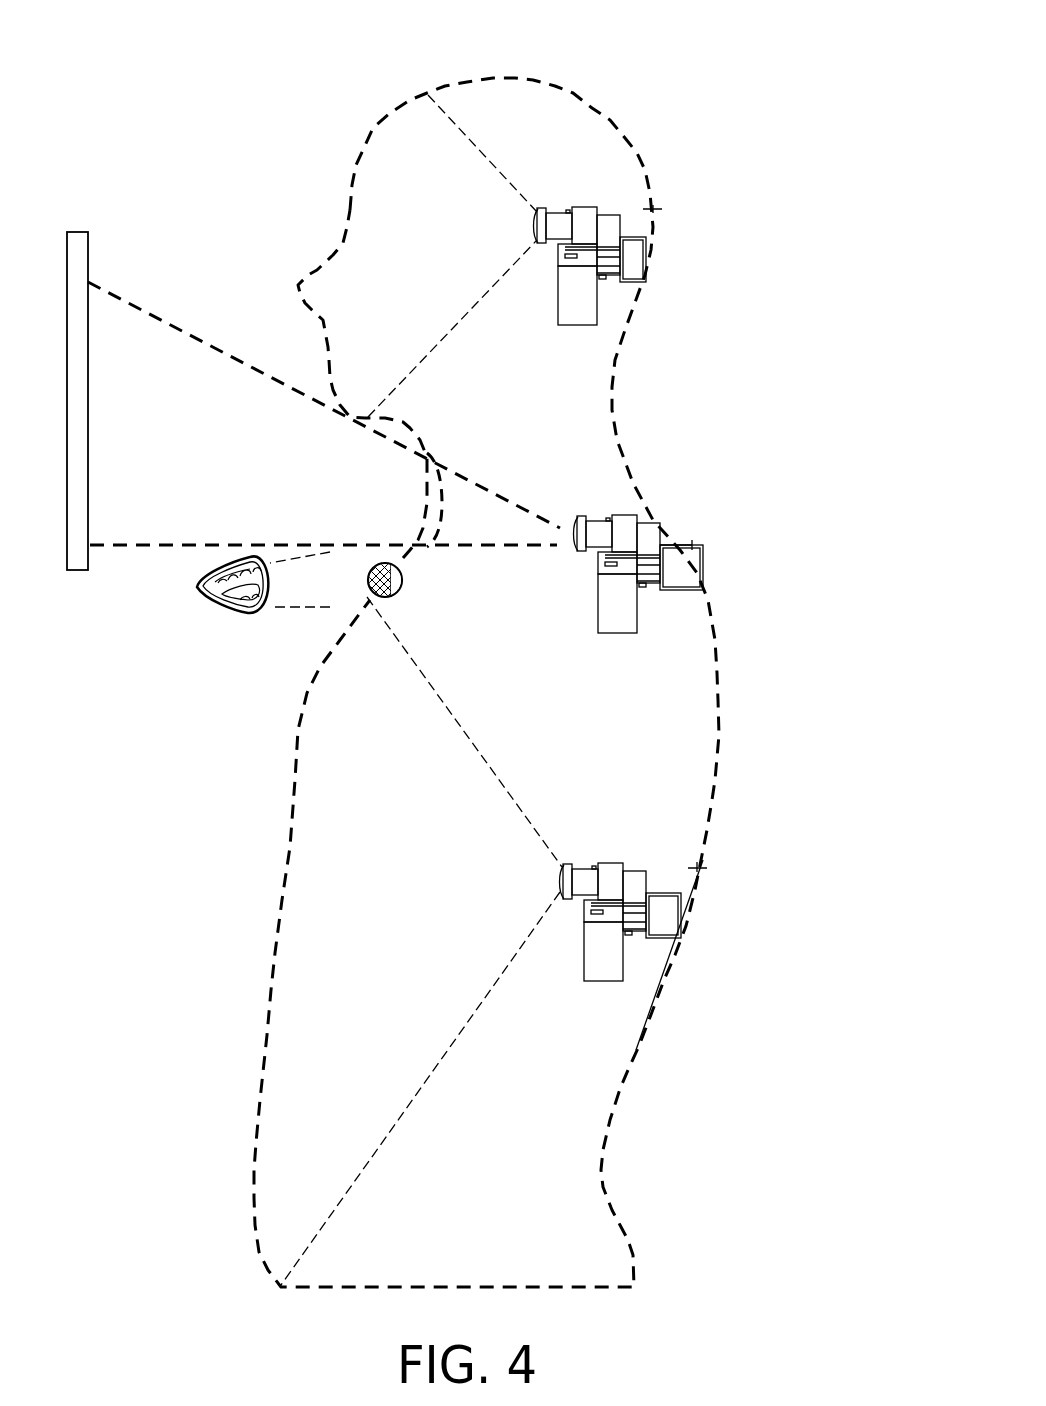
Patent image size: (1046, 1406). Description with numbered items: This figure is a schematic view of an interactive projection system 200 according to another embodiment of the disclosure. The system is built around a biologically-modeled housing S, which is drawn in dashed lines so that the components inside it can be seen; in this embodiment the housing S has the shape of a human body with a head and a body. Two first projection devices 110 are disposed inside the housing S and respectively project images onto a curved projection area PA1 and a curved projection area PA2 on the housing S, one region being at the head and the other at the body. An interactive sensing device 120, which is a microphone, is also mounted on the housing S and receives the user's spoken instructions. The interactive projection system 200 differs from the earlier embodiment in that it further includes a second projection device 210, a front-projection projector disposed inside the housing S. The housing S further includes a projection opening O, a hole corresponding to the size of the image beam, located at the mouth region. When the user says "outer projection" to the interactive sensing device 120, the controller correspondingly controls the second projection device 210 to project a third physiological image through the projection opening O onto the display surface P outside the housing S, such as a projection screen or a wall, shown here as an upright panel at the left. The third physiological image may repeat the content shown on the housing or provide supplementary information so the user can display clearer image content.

The first projection device 110 is at (588, 222).
The second projection device 210 is at (623, 524).
The interactive sensing device 120 is at (367, 585).
The interactive projection system 200 is at (862, 1272).
The biologically-modeled housing S is at (485, 76).
The display surface P is at (77, 232).
The curved projection area PA1 is at (270, 1000).
The curved projection area PA2 is at (348, 200).
The projection opening O is at (443, 500).